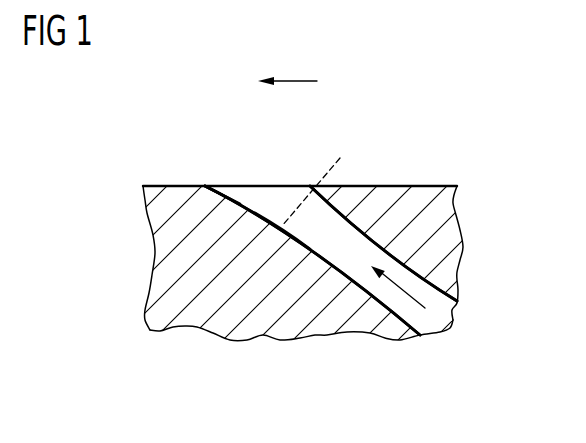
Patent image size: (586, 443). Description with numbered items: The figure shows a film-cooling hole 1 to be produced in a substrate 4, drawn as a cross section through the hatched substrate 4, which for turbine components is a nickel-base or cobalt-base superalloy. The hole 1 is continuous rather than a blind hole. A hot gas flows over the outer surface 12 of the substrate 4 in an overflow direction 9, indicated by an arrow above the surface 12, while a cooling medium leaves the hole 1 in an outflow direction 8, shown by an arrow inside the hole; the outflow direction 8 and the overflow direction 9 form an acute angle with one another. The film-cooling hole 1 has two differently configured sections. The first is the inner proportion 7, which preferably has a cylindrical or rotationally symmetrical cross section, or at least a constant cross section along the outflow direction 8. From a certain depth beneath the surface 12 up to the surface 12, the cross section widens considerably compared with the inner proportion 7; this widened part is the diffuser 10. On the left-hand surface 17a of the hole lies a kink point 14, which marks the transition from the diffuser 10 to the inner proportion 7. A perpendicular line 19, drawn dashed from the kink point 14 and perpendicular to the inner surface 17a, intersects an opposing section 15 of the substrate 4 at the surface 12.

The film-cooling hole 1 is at (150, 140).
The substrate 4 is at (162, 258).
The inner proportion 7 is at (345, 262).
The outflow direction 8 is at (424, 293).
The overflow direction 9 is at (293, 80).
The diffuser 10 is at (267, 187).
The outer surface 12 is at (425, 186).
The kink point 14 is at (283, 226).
The opposing section 15 is at (315, 187).
The left-hand surface 17a is at (225, 186).
The perpendicular line 19 is at (340, 158).